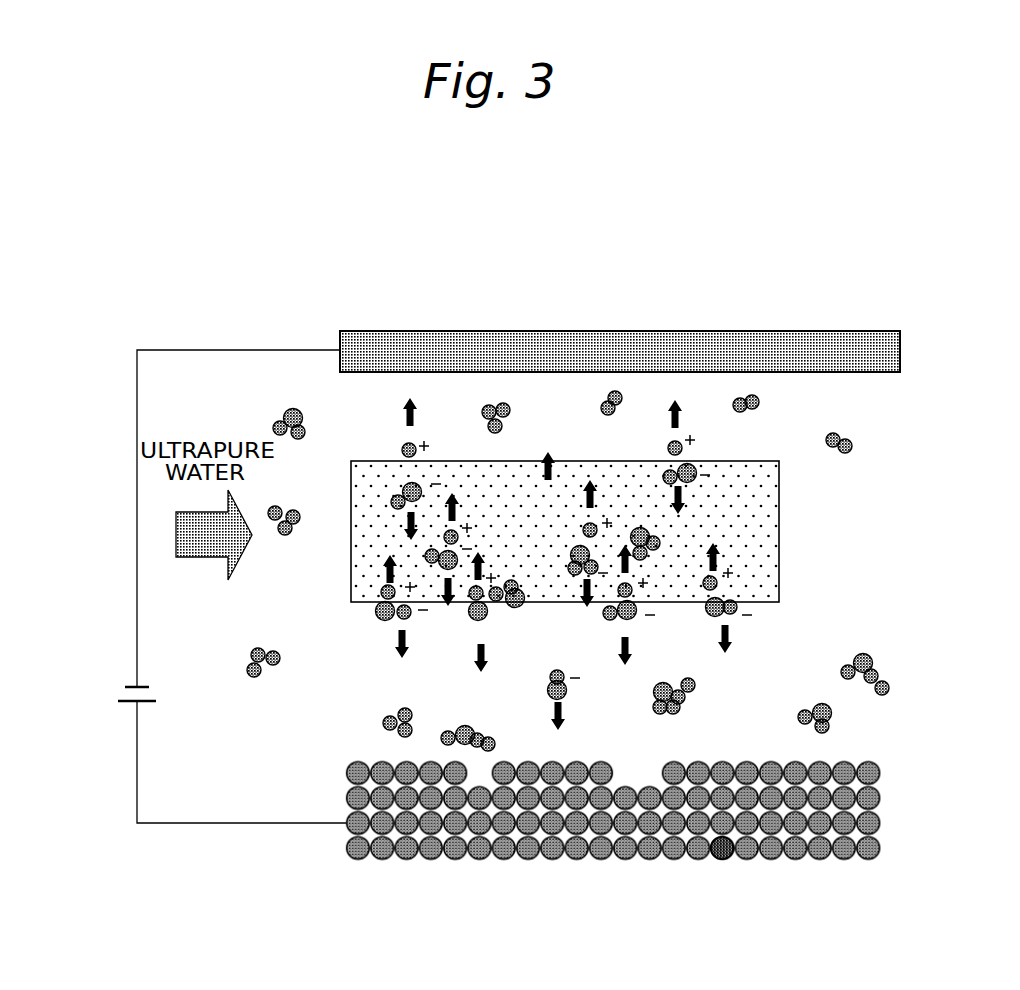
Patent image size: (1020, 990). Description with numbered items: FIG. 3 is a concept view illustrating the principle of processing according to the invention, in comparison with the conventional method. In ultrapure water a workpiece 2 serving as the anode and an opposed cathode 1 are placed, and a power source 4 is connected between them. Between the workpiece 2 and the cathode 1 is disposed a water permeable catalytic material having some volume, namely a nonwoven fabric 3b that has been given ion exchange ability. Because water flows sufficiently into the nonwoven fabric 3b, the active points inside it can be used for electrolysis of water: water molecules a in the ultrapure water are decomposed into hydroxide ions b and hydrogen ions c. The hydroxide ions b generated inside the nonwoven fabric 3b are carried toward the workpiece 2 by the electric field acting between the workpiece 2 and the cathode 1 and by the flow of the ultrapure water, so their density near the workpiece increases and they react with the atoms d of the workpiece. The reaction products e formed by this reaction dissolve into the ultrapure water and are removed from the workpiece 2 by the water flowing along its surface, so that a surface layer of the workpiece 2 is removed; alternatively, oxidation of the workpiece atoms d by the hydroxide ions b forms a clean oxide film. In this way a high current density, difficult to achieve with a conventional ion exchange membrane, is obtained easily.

The cathode 1 is at (513, 331).
The workpiece 2 is at (569, 867).
The nonwoven fabric 3b is at (780, 540).
The power source 4 is at (128, 703).
The water molecules a is at (283, 416).
The hydroxide ions b is at (383, 621).
The hydrogen ions c is at (395, 449).
The atoms of the workpiece d is at (722, 858).
The reaction products e is at (878, 672).